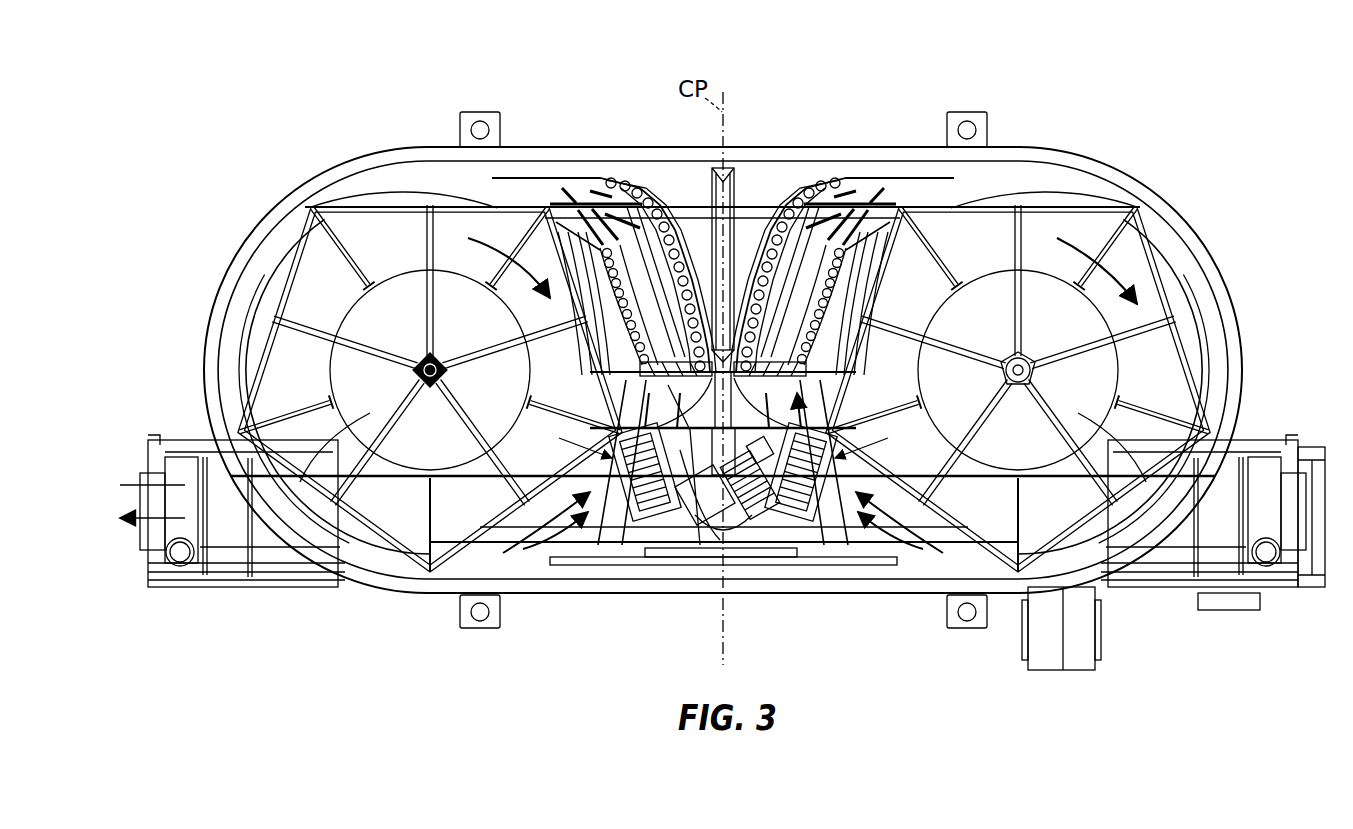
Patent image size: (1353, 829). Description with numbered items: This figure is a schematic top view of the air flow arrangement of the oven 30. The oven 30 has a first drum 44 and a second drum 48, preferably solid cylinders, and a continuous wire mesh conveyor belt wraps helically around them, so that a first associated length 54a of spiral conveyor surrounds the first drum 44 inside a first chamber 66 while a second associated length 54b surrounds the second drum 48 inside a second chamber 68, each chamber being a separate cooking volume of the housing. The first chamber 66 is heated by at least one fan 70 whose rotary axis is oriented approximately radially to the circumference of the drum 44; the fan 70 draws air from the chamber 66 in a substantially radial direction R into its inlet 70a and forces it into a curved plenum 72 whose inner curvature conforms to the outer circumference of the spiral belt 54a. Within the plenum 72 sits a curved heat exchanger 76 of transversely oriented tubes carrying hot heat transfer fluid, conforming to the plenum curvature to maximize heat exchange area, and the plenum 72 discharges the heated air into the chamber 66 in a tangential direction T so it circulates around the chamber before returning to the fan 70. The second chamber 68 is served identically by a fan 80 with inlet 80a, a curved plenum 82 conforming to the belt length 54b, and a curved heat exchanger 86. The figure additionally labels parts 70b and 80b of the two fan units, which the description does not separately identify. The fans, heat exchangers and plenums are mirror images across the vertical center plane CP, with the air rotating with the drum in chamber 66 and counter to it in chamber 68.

The oven 30 is at (840, 88).
The first drum 44 is at (1160, 490).
The second drum 48 is at (318, 460).
The first associated length of spiral conveyor 54a is at (1128, 268).
The second associated length of spiral conveyor 54b is at (383, 243).
The first chamber 66 is at (1044, 232).
The second chamber 68 is at (452, 236).
The curved plenum 72 is at (772, 228).
The curved heat exchanger 76 is at (906, 235).
The curved plenum 82 is at (593, 190).
The curved heat exchanger 86 is at (673, 267).
The fan 70 is at (815, 448).
The inlet 70a is at (808, 442).
The feed roller drive 70b is at (760, 442).
The fan 80 is at (633, 448).
The inlet 80a is at (640, 442).
The left feed roller housing 80b is at (686, 442).